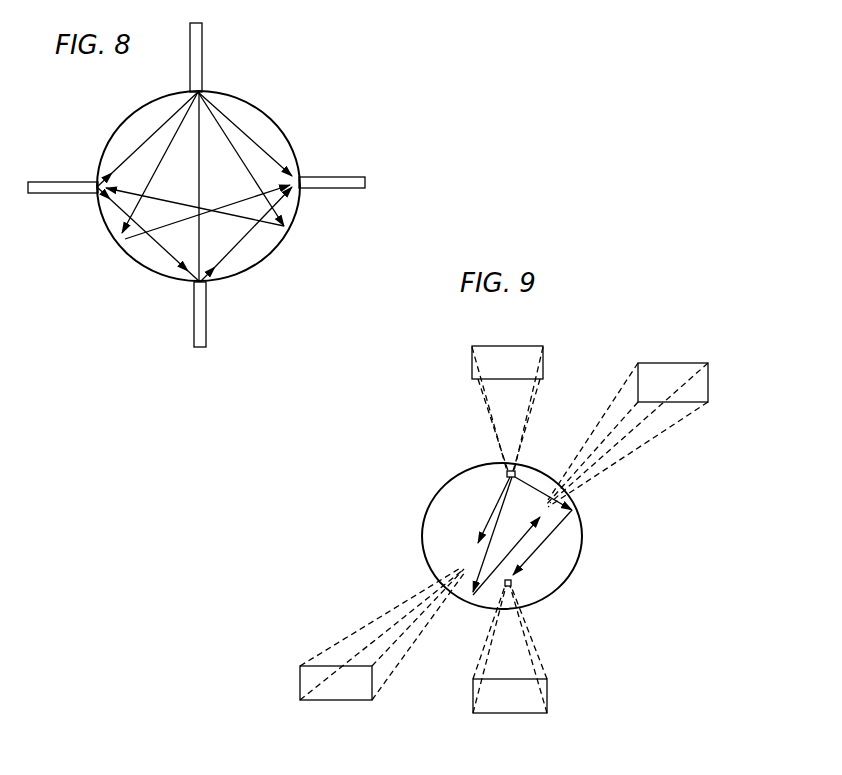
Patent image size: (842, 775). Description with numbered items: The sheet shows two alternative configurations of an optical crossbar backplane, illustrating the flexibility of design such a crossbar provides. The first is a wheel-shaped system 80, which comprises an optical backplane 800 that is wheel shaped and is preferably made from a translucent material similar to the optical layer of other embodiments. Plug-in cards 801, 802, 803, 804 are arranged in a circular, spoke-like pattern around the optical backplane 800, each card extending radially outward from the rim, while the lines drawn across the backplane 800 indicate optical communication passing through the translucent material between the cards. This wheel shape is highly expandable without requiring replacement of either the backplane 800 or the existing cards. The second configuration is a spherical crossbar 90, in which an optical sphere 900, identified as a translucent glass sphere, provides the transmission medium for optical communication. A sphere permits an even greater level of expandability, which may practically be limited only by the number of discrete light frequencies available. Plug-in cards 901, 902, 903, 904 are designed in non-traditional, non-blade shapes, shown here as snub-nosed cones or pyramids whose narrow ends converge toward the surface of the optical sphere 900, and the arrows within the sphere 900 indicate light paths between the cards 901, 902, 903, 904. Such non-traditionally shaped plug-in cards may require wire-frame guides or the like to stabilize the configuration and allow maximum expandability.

In FIG. 8, the system 80 is at (305, 85).
In FIG. 8, the optical backplane 800 is at (270, 253).
In FIG. 8, the plug-in card 801 is at (334, 177).
In FIG. 8, the plug-in card 802 is at (206, 308).
In FIG. 8, the plug-in card 803 is at (63, 182).
In FIG. 8, the plug-in card 804 is at (202, 57).
In FIG. 9, the spherical crossbar 90 is at (607, 312).
In FIG. 9, the optical sphere 900 is at (443, 488).
In FIG. 9, the plug-in card 901 is at (508, 345).
In FIG. 9, the plug-in card 902 is at (673, 363).
In FIG. 9, the plug-in card 903 is at (550, 692).
In FIG. 9, the plug-in card 904 is at (300, 688).